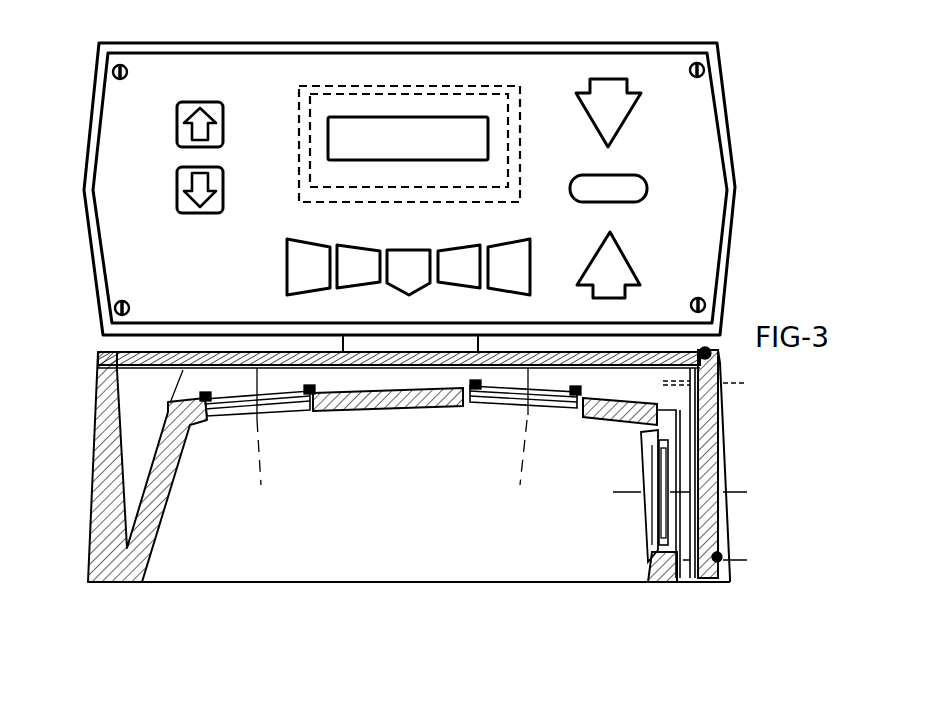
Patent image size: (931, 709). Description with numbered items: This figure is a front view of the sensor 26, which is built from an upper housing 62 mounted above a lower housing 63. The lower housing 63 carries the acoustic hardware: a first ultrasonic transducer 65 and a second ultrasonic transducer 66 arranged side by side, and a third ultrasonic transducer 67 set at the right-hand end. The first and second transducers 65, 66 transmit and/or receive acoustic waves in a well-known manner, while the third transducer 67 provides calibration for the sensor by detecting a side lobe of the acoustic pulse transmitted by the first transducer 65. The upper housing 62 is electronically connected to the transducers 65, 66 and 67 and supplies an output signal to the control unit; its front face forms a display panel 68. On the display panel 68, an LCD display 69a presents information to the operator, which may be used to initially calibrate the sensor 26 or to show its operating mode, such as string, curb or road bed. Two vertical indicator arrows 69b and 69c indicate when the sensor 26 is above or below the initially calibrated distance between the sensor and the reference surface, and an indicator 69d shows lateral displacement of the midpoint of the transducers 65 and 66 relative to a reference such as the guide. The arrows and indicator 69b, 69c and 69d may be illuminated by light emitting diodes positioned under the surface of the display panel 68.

The sensor 26 is at (95, 336).
The upper housing 62 is at (724, 77).
The lower housing 63 is at (727, 482).
The first ultrasonic transducer 65 is at (237, 414).
The second ultrasonic transducer 66 is at (510, 403).
The third ultrasonic transducer 67 is at (647, 522).
The display panel 68 is at (258, 78).
The LCD display 69a is at (488, 136).
The vertical indicator arrow 69b is at (634, 117).
The vertical indicator arrow 69c is at (637, 267).
The indicator 69d is at (287, 265).